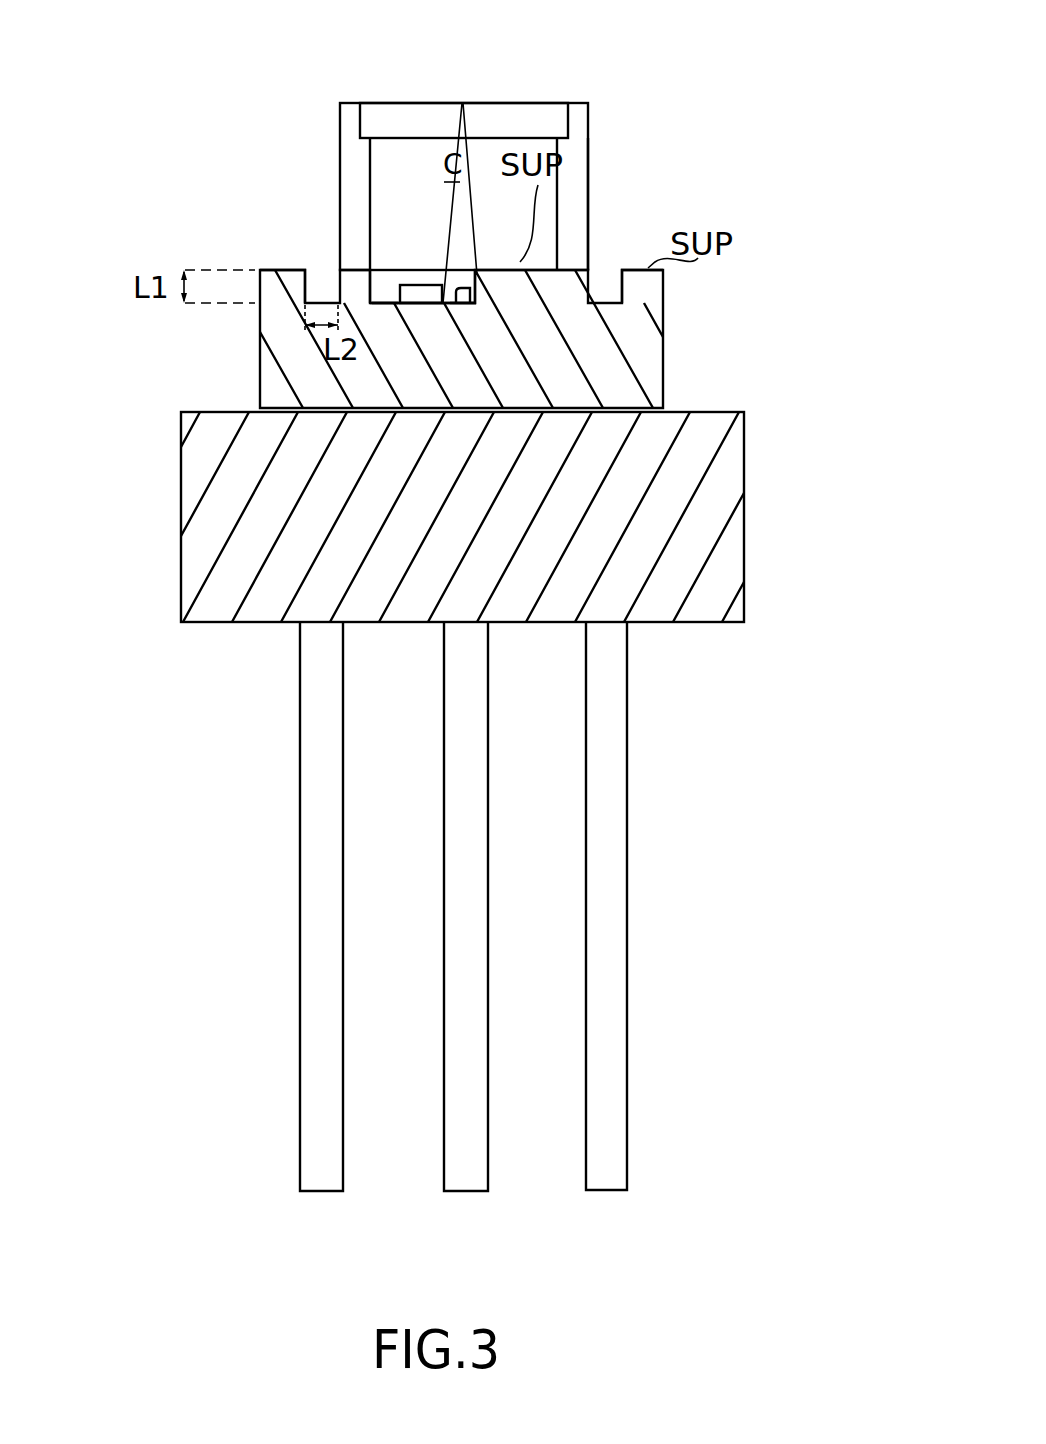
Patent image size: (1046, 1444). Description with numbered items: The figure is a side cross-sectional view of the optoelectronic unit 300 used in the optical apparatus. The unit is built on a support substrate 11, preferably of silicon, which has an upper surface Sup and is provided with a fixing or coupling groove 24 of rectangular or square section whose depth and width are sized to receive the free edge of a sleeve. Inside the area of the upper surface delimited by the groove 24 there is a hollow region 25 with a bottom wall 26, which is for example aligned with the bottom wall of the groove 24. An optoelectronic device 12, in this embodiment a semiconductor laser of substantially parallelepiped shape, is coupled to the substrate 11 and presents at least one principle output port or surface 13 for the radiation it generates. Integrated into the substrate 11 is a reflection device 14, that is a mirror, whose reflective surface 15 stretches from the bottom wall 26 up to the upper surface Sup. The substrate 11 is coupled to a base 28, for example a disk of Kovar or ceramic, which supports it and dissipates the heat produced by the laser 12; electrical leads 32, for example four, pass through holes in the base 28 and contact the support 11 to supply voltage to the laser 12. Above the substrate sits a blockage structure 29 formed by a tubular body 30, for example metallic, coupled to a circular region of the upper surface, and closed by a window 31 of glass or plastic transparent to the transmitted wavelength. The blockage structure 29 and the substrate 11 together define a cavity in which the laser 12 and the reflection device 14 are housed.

The support substrate 11 is at (663, 344).
The optoelectronic device 12 is at (417, 297).
The principle output port or surface 13 is at (446, 295).
The reflection device 14 is at (465, 276).
The reflective surface 15 is at (455, 305).
The fixing or coupling groove 24 is at (326, 282).
The hollow region 25 is at (382, 273).
The bottom wall 26 is at (383, 303).
The base 28 is at (745, 544).
The blockage structure 29 is at (596, 108).
The tubular body 30 is at (574, 170).
The window 31 is at (513, 115).
The electrical leads 32 is at (343, 1120).
The optoelectronic unit 300 is at (115, 655).